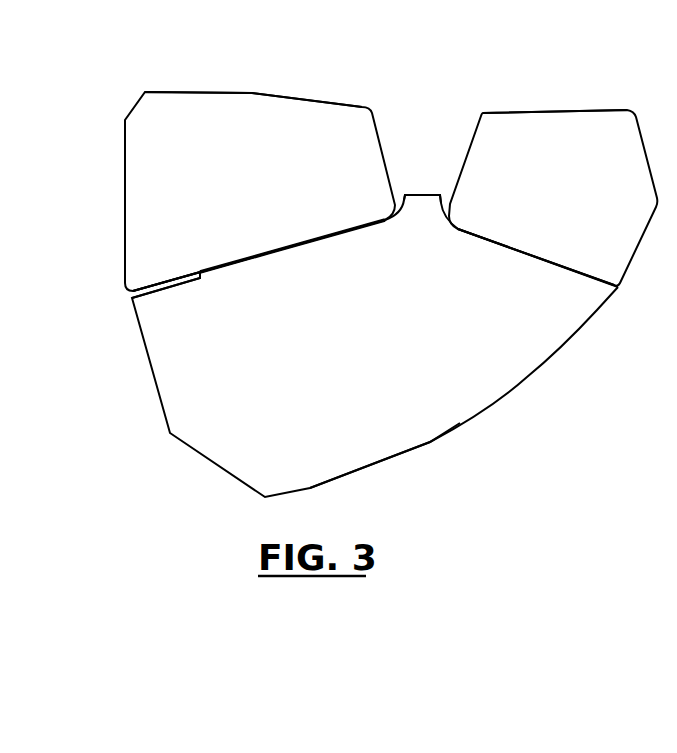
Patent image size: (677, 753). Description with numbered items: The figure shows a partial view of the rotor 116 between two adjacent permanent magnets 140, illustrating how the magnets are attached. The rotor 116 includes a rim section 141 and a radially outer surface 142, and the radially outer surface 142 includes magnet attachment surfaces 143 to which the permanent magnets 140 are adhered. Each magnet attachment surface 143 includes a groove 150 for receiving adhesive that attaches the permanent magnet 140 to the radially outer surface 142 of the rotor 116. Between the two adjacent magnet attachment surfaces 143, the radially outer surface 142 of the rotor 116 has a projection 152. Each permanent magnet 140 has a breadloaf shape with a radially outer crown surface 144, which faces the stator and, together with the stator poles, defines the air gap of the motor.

The rotor 116 is at (513, 413).
The permanent magnets 140 is at (200, 191).
The rim section 141 is at (328, 340).
The radially outer surface 142 is at (425, 197).
The magnet attachment surfaces 143 is at (318, 245).
The radially outer crown surface 144 is at (251, 92).
The groove 150 is at (160, 295).
The projection 152 is at (422, 184).